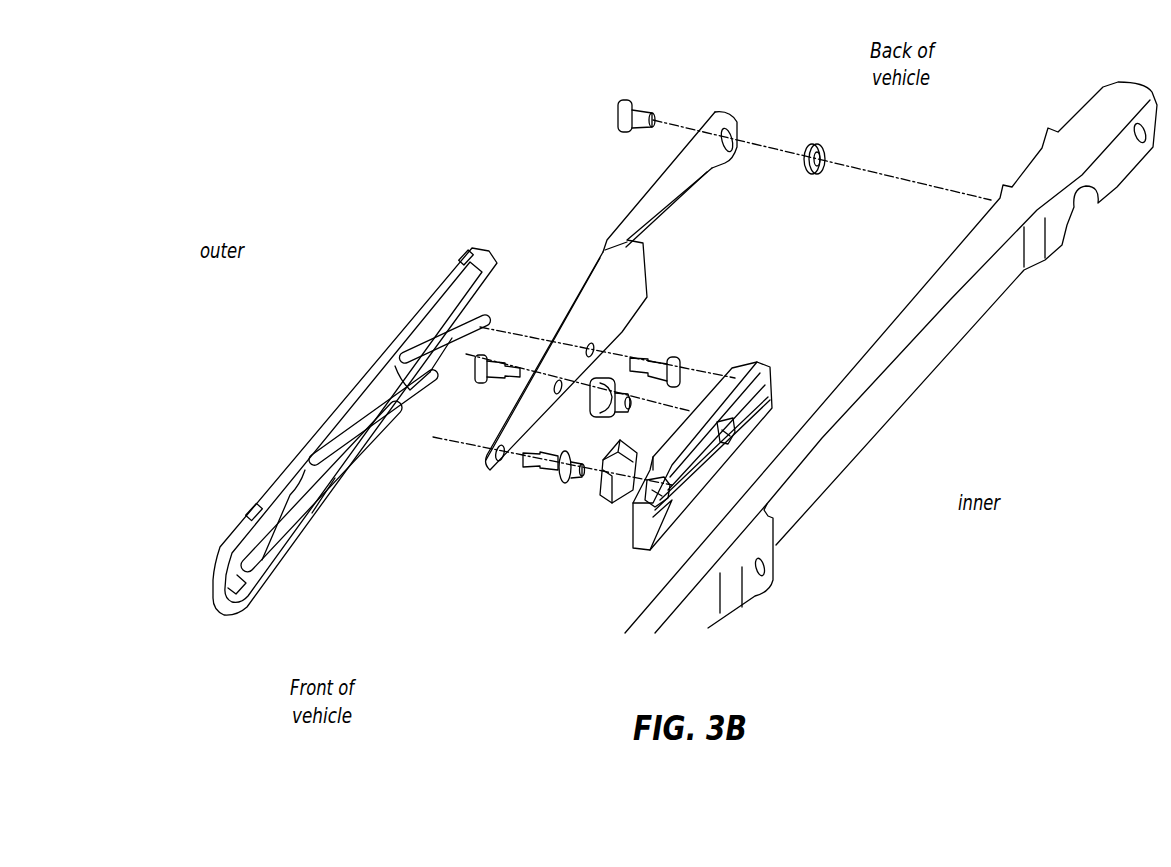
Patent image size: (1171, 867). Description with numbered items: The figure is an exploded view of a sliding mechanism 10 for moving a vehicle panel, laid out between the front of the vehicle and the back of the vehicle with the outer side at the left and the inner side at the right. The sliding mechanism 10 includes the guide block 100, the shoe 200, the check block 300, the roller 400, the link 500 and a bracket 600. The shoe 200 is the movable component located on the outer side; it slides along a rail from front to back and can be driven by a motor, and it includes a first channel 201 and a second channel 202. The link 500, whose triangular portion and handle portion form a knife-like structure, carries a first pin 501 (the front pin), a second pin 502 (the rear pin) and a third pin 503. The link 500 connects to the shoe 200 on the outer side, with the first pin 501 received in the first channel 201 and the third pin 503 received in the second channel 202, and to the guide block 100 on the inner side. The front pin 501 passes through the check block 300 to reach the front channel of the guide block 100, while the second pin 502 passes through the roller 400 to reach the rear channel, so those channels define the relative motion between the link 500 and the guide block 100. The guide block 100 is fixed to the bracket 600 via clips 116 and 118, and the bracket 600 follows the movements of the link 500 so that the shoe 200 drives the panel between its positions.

The sliding mechanism 10 is at (320, 131).
The guide block 100 is at (741, 363).
The clip 116 is at (736, 430).
The clip 118 is at (667, 498).
The shoe 200 is at (377, 363).
The first channel 201 is at (325, 497).
The second channel 202 is at (440, 365).
The check block 300 is at (612, 508).
The roller 400 is at (598, 418).
The link 500 is at (670, 172).
The first pin 501 is at (548, 473).
The second pin 502 is at (512, 345).
The third pin 503 is at (658, 347).
The bracket 600 is at (912, 356).